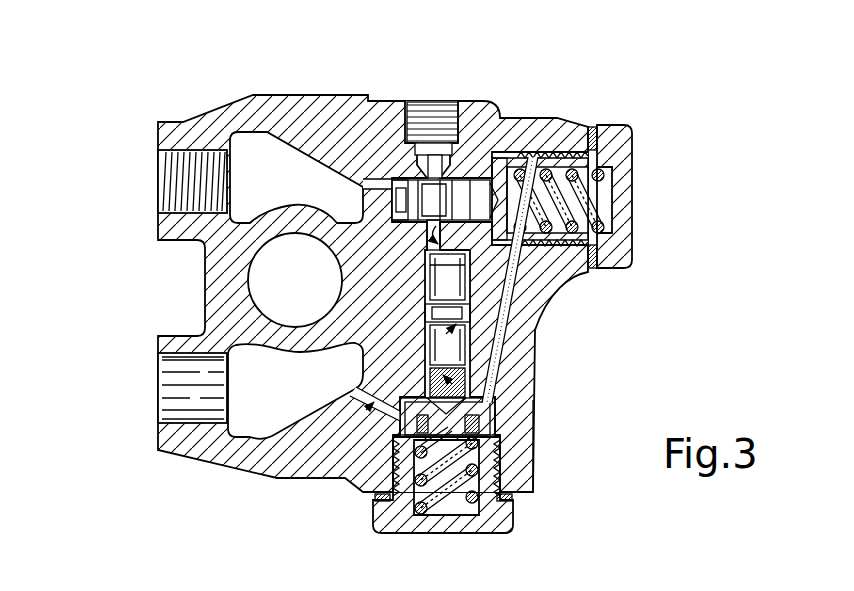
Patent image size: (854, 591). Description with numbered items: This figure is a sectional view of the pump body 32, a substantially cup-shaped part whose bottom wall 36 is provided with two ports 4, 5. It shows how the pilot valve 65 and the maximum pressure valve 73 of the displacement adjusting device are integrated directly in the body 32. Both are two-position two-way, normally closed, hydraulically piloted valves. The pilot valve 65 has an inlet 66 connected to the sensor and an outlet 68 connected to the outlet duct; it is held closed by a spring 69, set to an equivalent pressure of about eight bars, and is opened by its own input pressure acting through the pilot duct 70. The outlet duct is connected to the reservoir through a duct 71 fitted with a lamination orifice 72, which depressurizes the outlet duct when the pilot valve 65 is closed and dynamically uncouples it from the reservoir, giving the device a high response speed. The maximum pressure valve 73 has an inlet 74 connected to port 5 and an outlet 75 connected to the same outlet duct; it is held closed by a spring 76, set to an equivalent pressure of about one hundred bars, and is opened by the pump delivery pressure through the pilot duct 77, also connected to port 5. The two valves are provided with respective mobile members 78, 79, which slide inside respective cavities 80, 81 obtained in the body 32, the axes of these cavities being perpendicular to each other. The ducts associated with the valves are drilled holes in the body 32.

The port 4 is at (190, 414).
The port 5 is at (185, 158).
The body 32 is at (273, 438).
The bottom wall 36 is at (337, 453).
The pilot valve 65 is at (482, 311).
The inlet 66 is at (445, 270).
The outlet 68 is at (535, 442).
The spring 69 is at (447, 478).
The pilot duct 70 is at (398, 171).
The duct 71 is at (352, 432).
The lamination orifice 72 is at (420, 414).
The maximum pressure valve 73 is at (500, 126).
The inlet 74 is at (409, 140).
The outlet 75 is at (462, 215).
The spring 76 is at (596, 202).
The pilot duct 77 is at (366, 181).
The mobile member 78 is at (210, 456).
The mobile member 79 is at (438, 195).
The cavity 80 is at (440, 278).
The cavity 81 is at (511, 136).